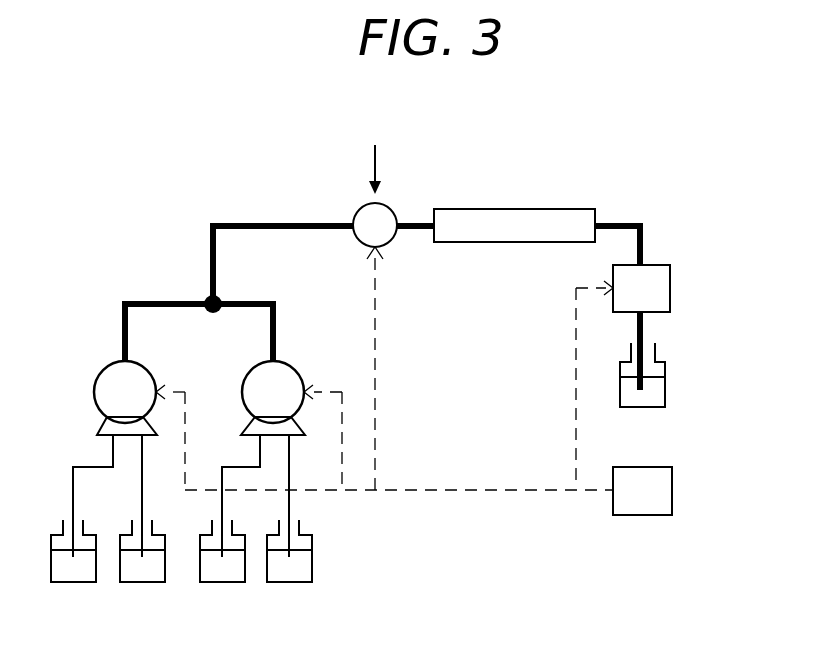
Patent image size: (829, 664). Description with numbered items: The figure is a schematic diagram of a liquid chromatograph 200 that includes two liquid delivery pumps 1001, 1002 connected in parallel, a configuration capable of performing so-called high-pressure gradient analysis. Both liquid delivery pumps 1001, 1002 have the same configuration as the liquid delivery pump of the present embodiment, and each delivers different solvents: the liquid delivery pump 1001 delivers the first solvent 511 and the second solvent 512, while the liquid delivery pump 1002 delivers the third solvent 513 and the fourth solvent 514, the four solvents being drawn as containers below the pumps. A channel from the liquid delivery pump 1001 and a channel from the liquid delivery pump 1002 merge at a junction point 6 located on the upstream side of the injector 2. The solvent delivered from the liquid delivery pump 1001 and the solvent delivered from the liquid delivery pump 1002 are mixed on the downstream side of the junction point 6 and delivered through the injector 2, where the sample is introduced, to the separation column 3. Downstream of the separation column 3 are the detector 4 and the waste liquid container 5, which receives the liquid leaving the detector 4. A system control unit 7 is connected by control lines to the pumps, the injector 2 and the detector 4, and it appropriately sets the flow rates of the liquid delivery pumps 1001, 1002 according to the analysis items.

The liquid chromatograph 200 is at (140, 184).
The injector 2 is at (391, 207).
The separation column 3 is at (513, 210).
The detector 4 is at (670, 290).
The waste liquid container 5 is at (665, 366).
The junction point 6 is at (205, 298).
The system control unit 7 is at (672, 497).
The liquid delivery pump 1001 is at (107, 388).
The liquid delivery pump 1002 is at (254, 388).
The first solvent 511 is at (74, 565).
The second solvent 512 is at (143, 565).
The third solvent 513 is at (223, 565).
The fourth solvent 514 is at (290, 565).